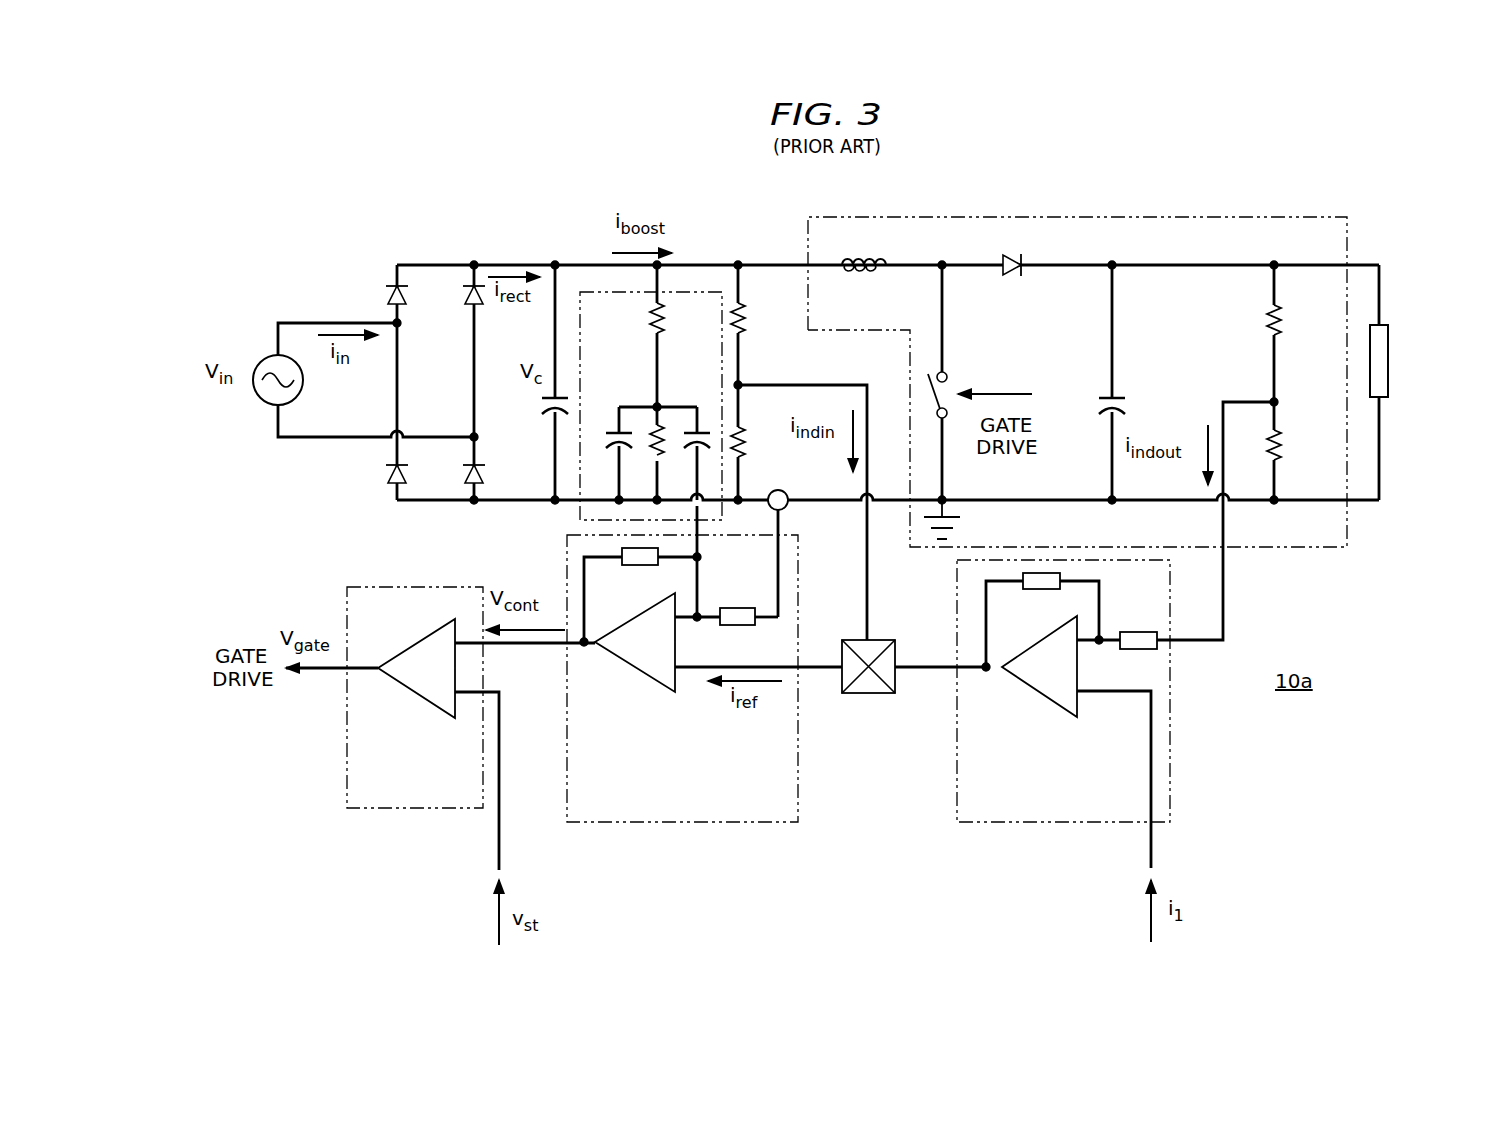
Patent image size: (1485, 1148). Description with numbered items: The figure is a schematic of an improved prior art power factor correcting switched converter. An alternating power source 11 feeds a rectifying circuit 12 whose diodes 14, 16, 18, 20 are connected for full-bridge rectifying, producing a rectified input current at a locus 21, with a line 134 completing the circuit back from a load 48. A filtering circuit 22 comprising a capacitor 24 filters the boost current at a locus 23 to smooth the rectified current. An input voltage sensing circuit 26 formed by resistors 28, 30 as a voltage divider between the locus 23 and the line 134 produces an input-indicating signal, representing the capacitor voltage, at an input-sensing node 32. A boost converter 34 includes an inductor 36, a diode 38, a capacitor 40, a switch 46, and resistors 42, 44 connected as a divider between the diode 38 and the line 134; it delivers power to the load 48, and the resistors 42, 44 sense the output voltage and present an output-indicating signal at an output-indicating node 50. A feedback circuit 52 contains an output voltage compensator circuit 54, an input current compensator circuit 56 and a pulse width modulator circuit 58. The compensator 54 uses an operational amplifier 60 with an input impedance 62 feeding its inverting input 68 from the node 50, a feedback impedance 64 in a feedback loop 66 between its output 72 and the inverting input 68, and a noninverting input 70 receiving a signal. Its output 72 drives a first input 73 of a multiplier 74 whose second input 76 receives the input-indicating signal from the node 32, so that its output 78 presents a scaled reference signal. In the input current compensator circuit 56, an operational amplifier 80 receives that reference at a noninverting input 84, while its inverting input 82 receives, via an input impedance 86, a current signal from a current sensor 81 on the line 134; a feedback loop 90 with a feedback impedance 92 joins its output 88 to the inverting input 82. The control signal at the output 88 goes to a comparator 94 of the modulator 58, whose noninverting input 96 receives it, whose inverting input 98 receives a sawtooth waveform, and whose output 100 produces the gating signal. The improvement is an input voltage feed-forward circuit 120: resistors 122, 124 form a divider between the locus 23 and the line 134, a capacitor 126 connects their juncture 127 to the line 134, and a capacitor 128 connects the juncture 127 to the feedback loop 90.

The alternating power source 11 is at (264, 396).
The rectifying circuit 12 is at (432, 254).
The diode 14 is at (392, 293).
The diode 16 is at (468, 300).
The diode 18 is at (388, 476).
The diode 20 is at (482, 477).
The locus 21 is at (518, 255).
The filtering circuit 22 is at (546, 240).
The locus 23 is at (584, 258).
The capacitor 24 is at (550, 420).
The input voltage sensing circuit 26 is at (752, 255).
The resistor 28 is at (745, 316).
The resistor 30 is at (745, 446).
The input-sensing node 32 is at (866, 576).
The boost converter 34 is at (1018, 208).
The inductor 36 is at (874, 276).
The diode 38 is at (1011, 274).
The capacitor 40 is at (1120, 398).
The resistor 42 is at (1264, 322).
The resistor 44 is at (1282, 444).
The switch 46 is at (950, 382).
The load 48 is at (1390, 378).
The output-indicating node 50 is at (1224, 562).
The feedback circuit 52 is at (1186, 758).
The output voltage compensator circuit 54 is at (1044, 822).
The input current compensator circuit 56 is at (684, 822).
The pulse width modulator circuit 58 is at (346, 782).
The operational amplifier 60 is at (1036, 688).
The input impedance 62 is at (1140, 632).
The feedback impedance 64 is at (1044, 590).
The feedback loop 66 is at (1090, 580).
The inverting input 68 is at (1086, 646).
The noninverting input 70 is at (1086, 692).
The output 72 is at (998, 668).
The first input 73 is at (900, 674).
The multiplier 74 is at (868, 694).
The second input 76 is at (864, 635).
The output 78 is at (840, 674).
The operational amplifier 80 is at (644, 678).
The current sensor 81 is at (786, 498).
The inverting input 82 is at (680, 626).
The noninverting input 84 is at (688, 688).
The input impedance 86 is at (728, 608).
The output 88 is at (598, 648).
The feedback loop 90 is at (696, 558).
The feedback impedance 92 is at (640, 570).
The comparator 94 is at (416, 702).
The noninverting input 96 is at (456, 626).
The inverting input 98 is at (472, 698).
The output 100 is at (376, 666).
The input voltage feed-forward circuit 120 is at (654, 349).
The resistor 122 is at (652, 322).
The resistor 124 is at (652, 414).
The capacitor 126 is at (610, 432).
The juncture 127 is at (660, 404).
The capacitor 128 is at (706, 432).
The line 134 is at (512, 502).